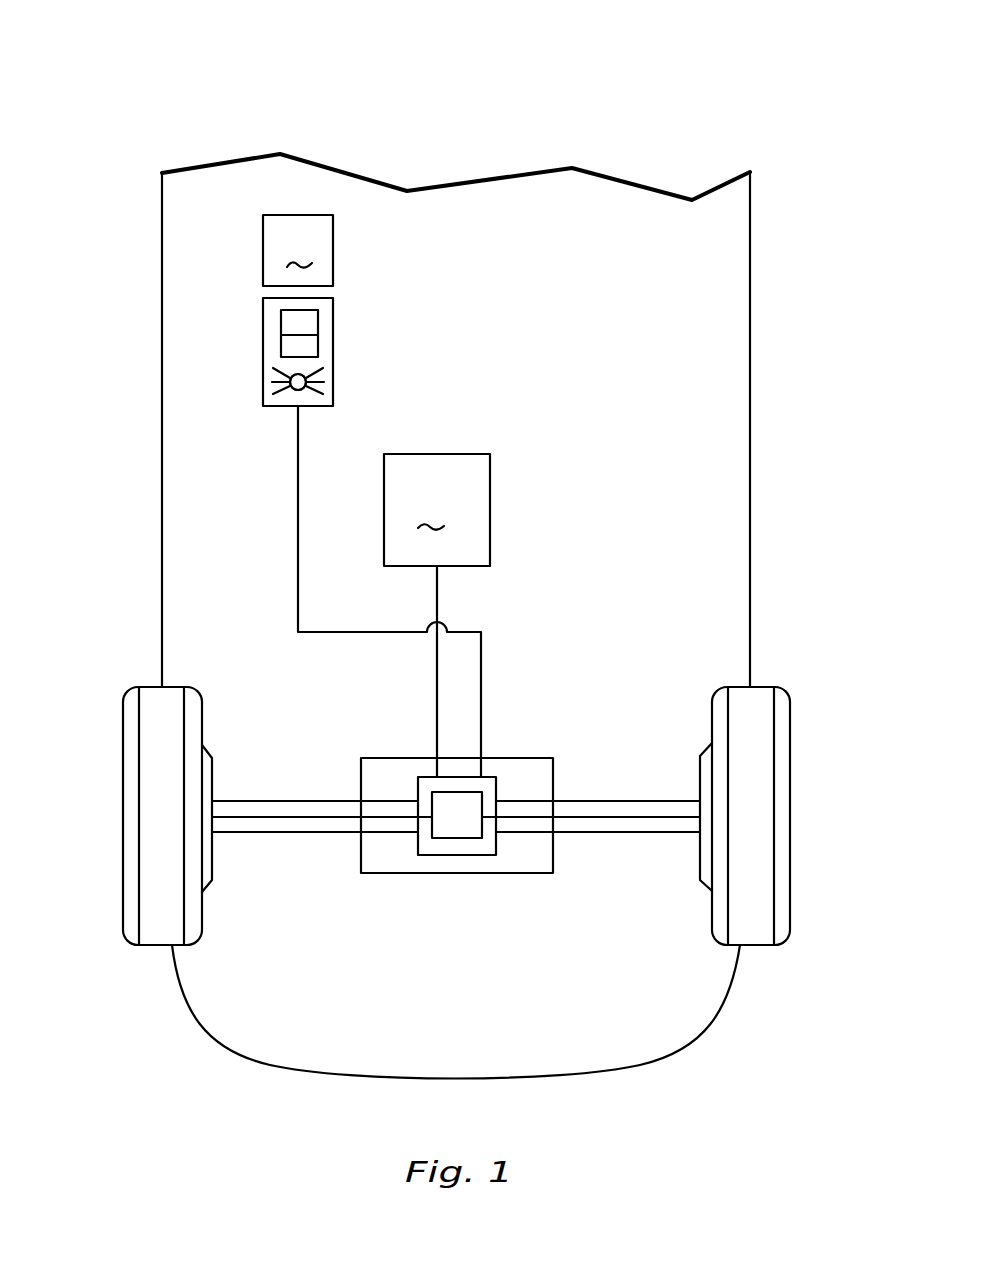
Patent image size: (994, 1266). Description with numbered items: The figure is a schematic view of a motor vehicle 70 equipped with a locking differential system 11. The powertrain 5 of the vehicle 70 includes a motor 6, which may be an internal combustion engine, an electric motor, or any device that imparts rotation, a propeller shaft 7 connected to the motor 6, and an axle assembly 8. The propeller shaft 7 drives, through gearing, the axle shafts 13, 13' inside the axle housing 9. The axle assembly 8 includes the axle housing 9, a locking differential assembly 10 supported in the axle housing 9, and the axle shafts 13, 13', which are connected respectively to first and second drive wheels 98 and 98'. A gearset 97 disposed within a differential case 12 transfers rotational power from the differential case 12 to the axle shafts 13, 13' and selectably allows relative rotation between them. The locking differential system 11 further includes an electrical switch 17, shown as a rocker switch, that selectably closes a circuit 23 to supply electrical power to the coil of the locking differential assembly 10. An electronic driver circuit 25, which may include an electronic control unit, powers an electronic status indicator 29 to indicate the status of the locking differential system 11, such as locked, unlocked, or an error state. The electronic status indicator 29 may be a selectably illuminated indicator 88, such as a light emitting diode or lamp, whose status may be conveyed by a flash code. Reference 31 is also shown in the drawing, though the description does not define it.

The locking differential system 11 is at (302, 128).
The vehicle 70 is at (535, 148).
The steering input system 31 is at (495, 305).
The electronic driver circuit 25 is at (298, 250).
The electrical switch 17 is at (263, 345).
The electronic status indicator 29 is at (310, 383).
The selectably illuminated indicator 88 is at (383, 367).
The circuit 23 is at (297, 576).
The powertrain 5 is at (513, 415).
The motor 6 is at (437, 510).
The propeller shaft 7 is at (438, 597).
The axle assembly 8 is at (567, 758).
The locking differential assembly 10 is at (490, 775).
The differential case 12 is at (468, 817).
The gearset 97 is at (446, 837).
The axle shaft 13 is at (315, 771).
The axle shaft 13' is at (598, 781).
The axle housing 9 is at (325, 832).
The first drive wheel 98 is at (123, 816).
The second drive wheel 98' is at (807, 816).